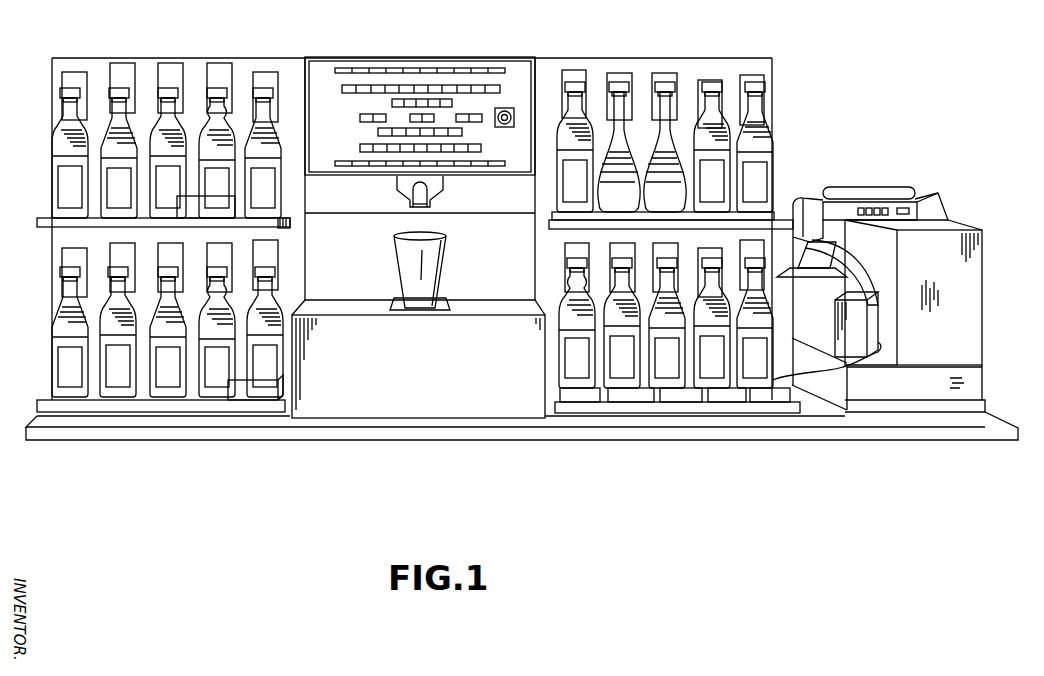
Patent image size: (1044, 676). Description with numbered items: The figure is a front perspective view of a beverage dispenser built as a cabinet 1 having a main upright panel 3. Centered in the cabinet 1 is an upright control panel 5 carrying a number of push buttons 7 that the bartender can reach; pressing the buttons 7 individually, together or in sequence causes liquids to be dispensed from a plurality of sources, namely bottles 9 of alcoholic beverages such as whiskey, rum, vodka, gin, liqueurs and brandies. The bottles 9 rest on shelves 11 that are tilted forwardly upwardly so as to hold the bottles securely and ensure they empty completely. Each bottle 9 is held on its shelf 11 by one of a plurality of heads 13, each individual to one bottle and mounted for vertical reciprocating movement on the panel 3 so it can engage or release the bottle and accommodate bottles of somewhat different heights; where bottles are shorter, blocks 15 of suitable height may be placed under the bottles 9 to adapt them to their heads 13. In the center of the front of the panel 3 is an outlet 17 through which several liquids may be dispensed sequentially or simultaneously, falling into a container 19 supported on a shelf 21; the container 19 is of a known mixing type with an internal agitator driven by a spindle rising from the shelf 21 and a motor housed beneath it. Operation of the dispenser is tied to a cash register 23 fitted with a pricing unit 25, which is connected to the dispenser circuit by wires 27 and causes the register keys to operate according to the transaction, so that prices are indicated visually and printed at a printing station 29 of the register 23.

The cabinet 1 is at (596, 68).
The main upright panel 3 is at (293, 62).
The control panel 5 is at (517, 66).
The push buttons 7 is at (398, 92).
The bottles 9 is at (60, 340).
The shelves 11 is at (67, 222).
The heads 13 is at (168, 95).
The blocks 15 is at (583, 397).
The outlet 17 is at (430, 197).
The container 19 is at (446, 268).
The shelf 21 is at (360, 308).
The cash register 23 is at (830, 205).
The pricing unit 25 is at (963, 313).
The wires 27 is at (820, 373).
The printing station 29 is at (818, 277).